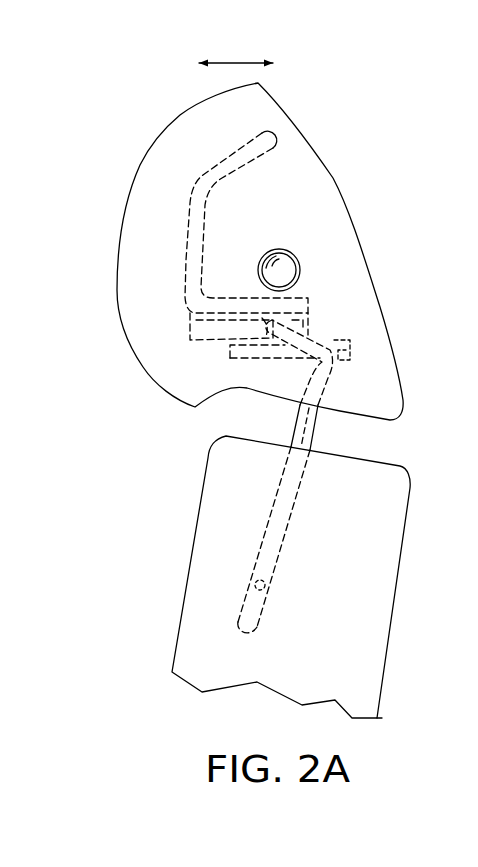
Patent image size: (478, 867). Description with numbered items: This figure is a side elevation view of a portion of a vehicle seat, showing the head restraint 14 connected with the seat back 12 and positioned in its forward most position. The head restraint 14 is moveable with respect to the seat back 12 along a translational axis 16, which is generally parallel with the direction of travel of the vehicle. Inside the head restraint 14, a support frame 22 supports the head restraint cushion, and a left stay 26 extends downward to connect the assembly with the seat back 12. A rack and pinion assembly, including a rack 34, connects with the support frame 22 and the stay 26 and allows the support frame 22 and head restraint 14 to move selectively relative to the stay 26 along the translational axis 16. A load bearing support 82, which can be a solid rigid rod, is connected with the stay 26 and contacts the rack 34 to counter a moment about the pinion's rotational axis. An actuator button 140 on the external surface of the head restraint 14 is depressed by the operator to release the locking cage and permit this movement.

The seat back 12 is at (208, 543).
The head restraint 14 is at (163, 124).
The translational axis 16 is at (233, 63).
The support frame 22 is at (183, 206).
The left stay 26 is at (322, 429).
The rack 34 is at (183, 346).
The load bearing support 82 is at (343, 336).
The actuator button 140 is at (287, 266).